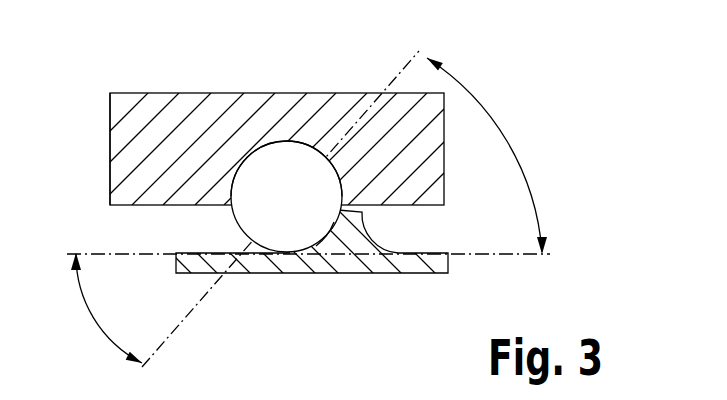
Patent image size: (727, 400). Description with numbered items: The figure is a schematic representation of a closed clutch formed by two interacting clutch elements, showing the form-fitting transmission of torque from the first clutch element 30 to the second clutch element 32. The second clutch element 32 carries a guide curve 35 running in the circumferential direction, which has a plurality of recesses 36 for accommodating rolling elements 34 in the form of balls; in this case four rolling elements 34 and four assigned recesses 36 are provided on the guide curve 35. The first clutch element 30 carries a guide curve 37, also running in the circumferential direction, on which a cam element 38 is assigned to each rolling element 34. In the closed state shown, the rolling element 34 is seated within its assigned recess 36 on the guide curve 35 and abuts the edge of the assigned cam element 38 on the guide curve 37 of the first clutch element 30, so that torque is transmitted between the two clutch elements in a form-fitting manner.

The first clutch element 30 is at (228, 265).
The second clutch element 32 is at (150, 112).
The rolling element 34 is at (285, 222).
The guide curve 35 is at (122, 205).
The recess 36 is at (311, 147).
The guide curve 37 is at (393, 254).
The cam element 38 is at (325, 238).